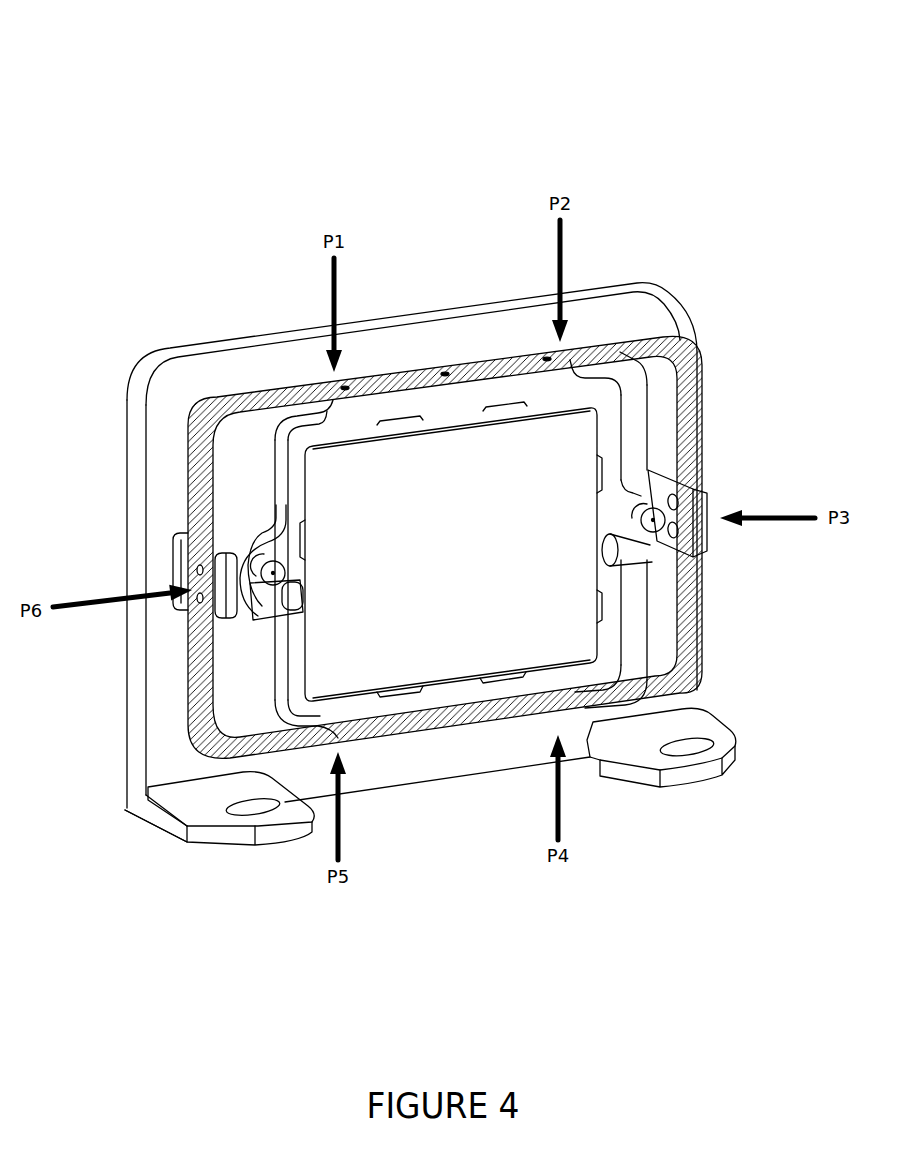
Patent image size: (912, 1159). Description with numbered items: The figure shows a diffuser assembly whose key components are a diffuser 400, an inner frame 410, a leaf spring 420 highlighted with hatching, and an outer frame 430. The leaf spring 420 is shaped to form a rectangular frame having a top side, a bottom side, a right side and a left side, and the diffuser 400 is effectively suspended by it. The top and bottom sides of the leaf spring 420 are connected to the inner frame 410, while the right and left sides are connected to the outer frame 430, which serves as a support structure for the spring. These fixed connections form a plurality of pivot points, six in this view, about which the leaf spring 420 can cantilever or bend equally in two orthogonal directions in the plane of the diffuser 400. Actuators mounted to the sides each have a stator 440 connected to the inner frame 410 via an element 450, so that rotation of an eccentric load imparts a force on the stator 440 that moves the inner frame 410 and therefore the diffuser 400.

The diffuser 400 is at (451, 551).
The inner frame 410 is at (455, 393).
The leaf spring 420 is at (210, 413).
The outer frame 430 is at (668, 322).
The stator 440 is at (223, 543).
The element 450 is at (273, 573).